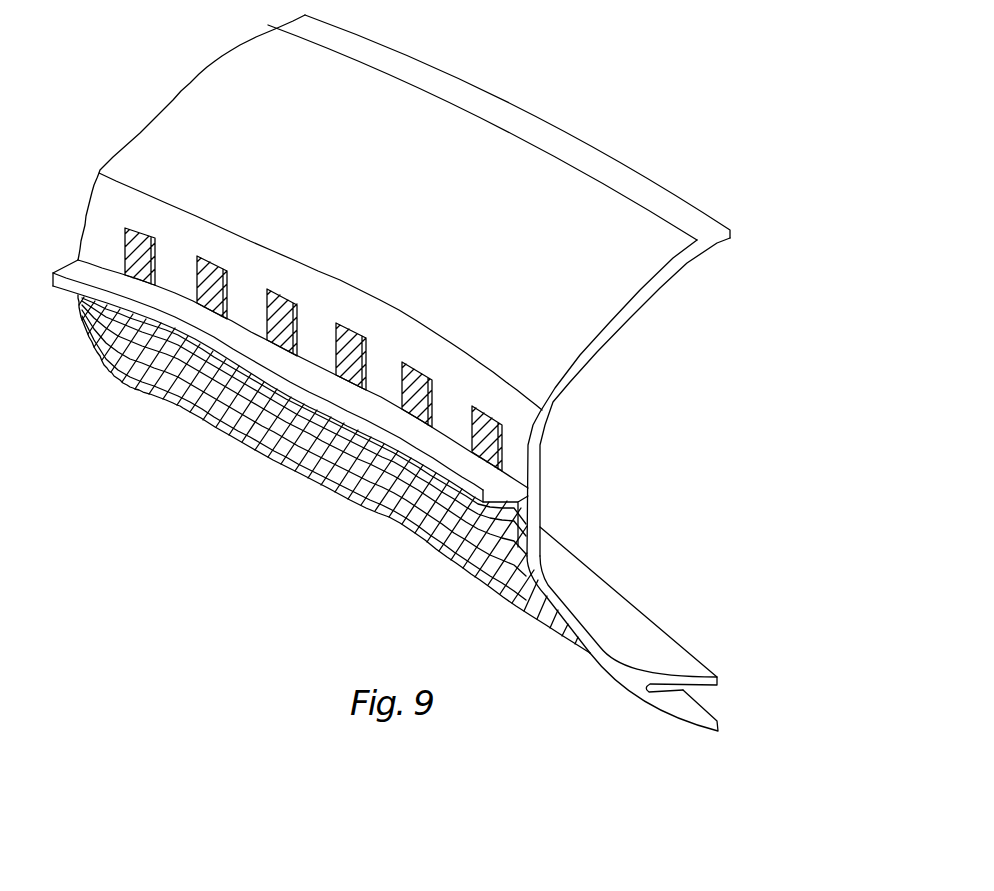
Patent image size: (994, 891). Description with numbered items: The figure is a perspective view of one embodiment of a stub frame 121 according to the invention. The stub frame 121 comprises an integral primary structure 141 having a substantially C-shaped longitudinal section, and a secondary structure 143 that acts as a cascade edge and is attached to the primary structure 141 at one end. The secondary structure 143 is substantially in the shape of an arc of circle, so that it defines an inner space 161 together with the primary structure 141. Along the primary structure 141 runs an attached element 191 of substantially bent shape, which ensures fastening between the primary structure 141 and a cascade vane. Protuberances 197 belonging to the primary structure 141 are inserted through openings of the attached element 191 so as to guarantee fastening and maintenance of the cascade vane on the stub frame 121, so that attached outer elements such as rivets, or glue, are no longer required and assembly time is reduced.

The stub frame 121 is at (426, 386).
The primary structure 141 is at (613, 326).
The protuberances 197 is at (500, 462).
The attached element 191 is at (523, 514).
The inner space 161 is at (705, 700).
The secondary structure 143 is at (692, 710).